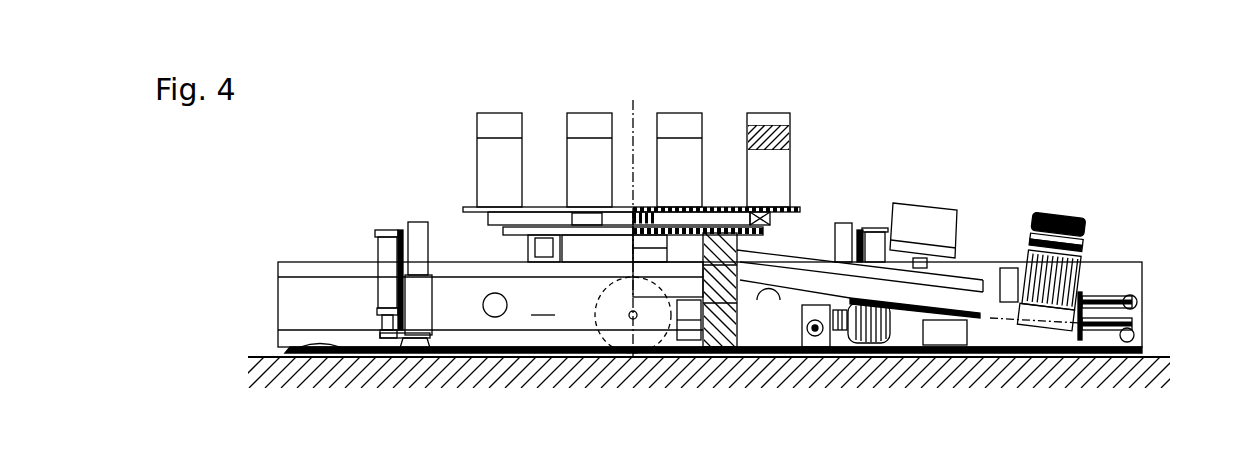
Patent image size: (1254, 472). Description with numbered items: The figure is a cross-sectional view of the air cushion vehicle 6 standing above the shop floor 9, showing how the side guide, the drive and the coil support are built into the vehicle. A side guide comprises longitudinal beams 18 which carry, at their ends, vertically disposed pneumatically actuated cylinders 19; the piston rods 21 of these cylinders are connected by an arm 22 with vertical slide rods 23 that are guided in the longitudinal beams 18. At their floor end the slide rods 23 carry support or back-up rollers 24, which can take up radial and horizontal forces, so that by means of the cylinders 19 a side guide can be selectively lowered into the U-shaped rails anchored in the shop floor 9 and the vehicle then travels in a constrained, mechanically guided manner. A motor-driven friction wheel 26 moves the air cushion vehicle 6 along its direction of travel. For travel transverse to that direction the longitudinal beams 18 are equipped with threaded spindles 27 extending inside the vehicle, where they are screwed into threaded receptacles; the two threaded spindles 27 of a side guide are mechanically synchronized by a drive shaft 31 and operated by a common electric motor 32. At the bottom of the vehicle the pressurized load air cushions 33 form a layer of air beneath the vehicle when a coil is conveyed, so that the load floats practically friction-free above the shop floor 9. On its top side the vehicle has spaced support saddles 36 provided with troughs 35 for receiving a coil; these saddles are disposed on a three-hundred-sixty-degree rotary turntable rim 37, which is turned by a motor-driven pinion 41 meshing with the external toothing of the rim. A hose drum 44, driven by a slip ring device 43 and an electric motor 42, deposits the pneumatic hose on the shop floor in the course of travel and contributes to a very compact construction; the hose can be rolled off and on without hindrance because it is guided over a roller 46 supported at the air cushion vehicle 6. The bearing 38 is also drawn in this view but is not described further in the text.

The air cushion vehicle 6 is at (848, 138).
The shop floor 9 is at (268, 353).
The longitudinal beams 18 is at (710, 228).
The pneumatically actuated cylinders 19 is at (382, 252).
The piston rods 21 is at (378, 323).
The arm 22 is at (389, 357).
The slide rods 23 is at (417, 228).
The support rollers 24 is at (421, 357).
The friction wheel 26 is at (622, 358).
The threaded spindles 27 is at (822, 338).
The drive shaft 31 is at (693, 333).
The electric motor 32 is at (875, 340).
The load air cushions 33 is at (295, 345).
The troughs 35 is at (497, 120).
The support saddles 36 is at (575, 165).
The rotary turntable rim 37 is at (466, 207).
The bearing 38 is at (772, 218).
The pinion 41 is at (590, 215).
The electric motor 42 is at (1058, 212).
The slip ring device 43 is at (935, 210).
The hose drum 44 is at (965, 270).
The roller 46 is at (1137, 318).